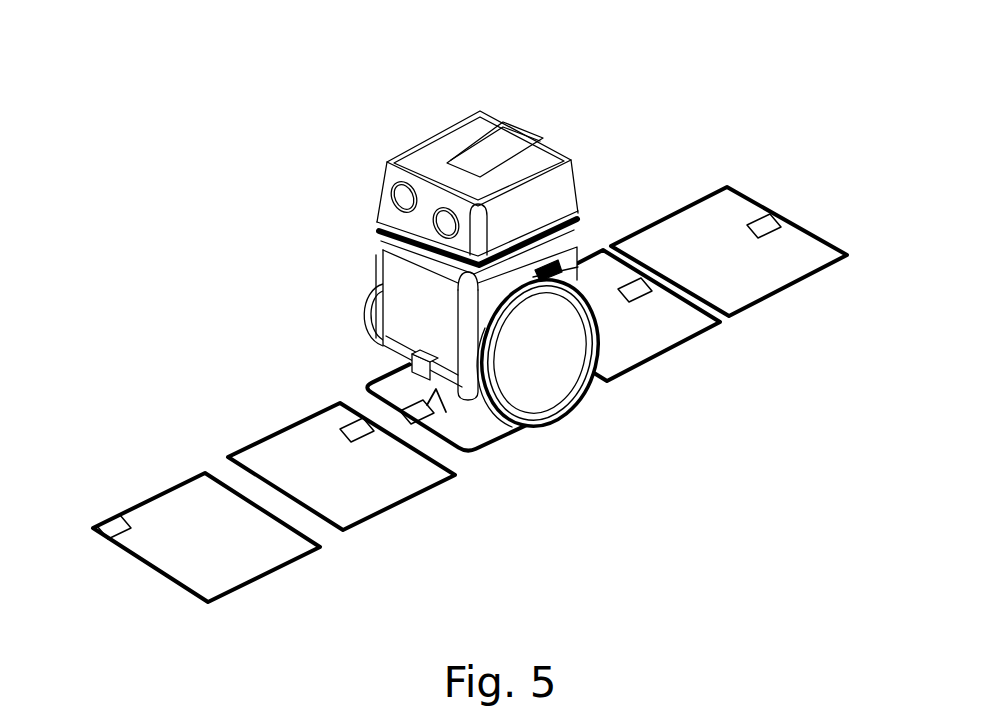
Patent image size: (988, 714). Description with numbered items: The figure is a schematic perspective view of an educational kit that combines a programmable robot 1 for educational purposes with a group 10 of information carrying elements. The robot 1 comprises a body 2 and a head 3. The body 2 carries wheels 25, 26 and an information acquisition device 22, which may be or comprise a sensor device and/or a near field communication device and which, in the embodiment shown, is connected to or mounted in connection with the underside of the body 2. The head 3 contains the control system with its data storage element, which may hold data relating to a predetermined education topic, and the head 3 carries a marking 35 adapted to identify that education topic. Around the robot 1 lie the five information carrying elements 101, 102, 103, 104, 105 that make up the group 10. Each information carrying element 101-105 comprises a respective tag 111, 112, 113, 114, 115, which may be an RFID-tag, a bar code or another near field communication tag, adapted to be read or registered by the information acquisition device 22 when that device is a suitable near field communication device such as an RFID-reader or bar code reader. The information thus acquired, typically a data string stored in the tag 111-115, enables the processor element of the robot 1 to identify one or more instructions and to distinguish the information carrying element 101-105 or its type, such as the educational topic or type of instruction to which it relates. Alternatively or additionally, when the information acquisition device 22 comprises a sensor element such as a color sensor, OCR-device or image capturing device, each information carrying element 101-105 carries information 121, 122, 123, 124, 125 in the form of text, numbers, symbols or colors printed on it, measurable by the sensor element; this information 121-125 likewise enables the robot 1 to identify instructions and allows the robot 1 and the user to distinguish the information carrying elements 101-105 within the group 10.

The programmable robot 1 is at (382, 110).
The body 2 is at (583, 258).
The head 3 is at (537, 177).
The group of information carrying elements 10 is at (850, 207).
The information acquisition device 22 is at (420, 350).
The wheel 25 is at (380, 320).
The wheel 26 is at (580, 400).
The marking 35 is at (513, 210).
The information carrying element 101 is at (810, 278).
The information carrying element 102 is at (609, 382).
The information carrying element 103 is at (507, 445).
The information carrying element 104 is at (341, 466).
The information carrying element 105 is at (190, 477).
The tag 111 is at (768, 222).
The tag 112 is at (640, 287).
The tag 113 is at (398, 418).
The tag 114 is at (283, 423).
The tag 115 is at (118, 527).
The information 121 is at (737, 267).
The information 122 is at (617, 323).
The information 123 is at (448, 418).
The information 124 is at (348, 477).
The information 125 is at (228, 553).